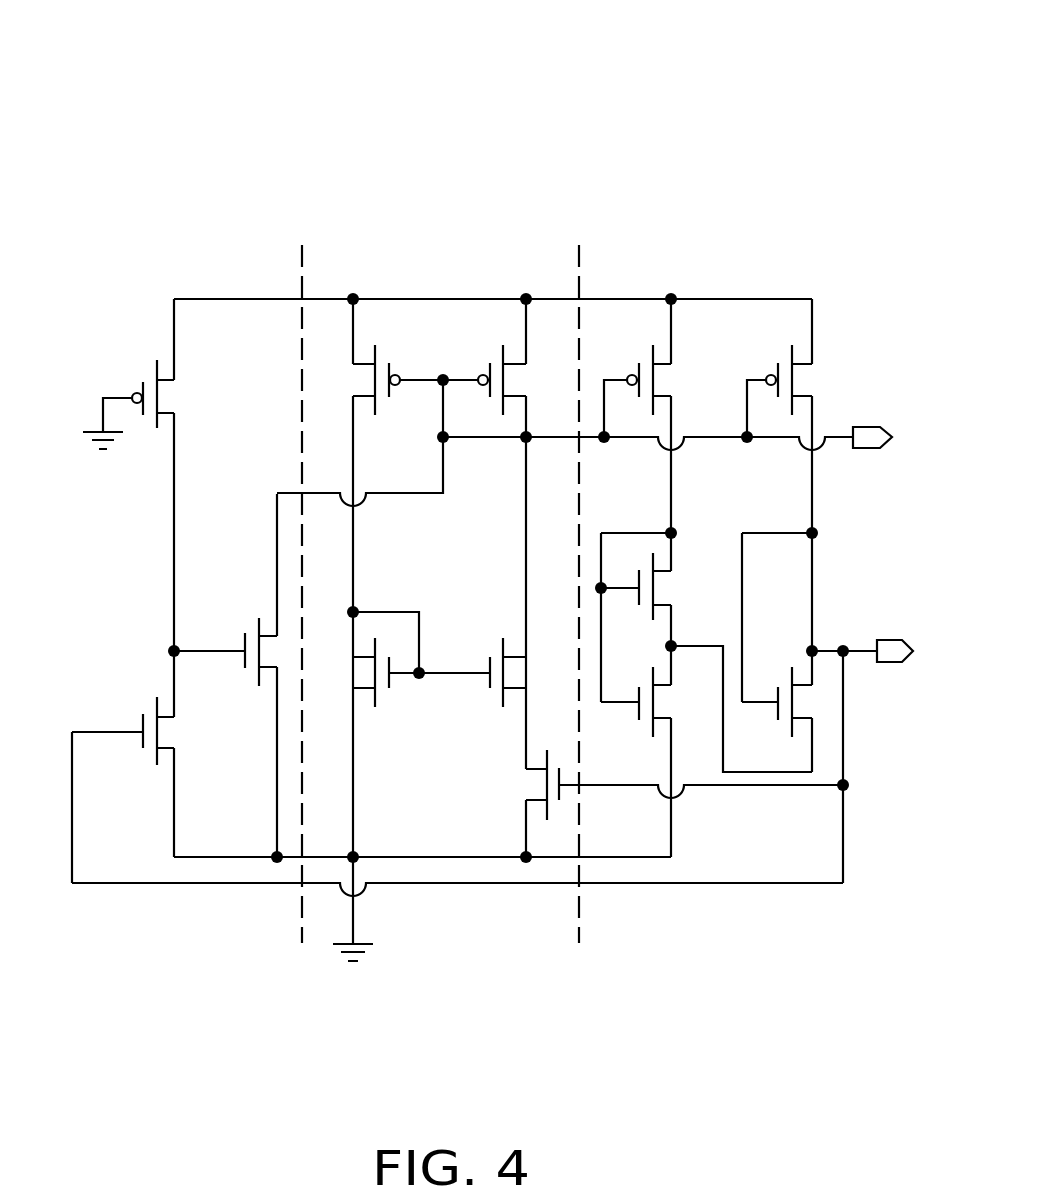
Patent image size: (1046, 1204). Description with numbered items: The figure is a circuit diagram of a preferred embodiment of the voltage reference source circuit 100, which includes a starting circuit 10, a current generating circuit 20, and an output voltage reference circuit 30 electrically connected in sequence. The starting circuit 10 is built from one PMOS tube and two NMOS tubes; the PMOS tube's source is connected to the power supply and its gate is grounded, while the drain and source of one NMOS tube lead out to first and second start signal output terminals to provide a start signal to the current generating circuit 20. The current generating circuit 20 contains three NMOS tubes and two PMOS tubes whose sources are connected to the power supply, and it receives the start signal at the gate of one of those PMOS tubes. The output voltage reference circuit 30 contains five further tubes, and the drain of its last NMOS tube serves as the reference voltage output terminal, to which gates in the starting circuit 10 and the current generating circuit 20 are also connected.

The voltage reference source circuit 100 is at (414, 65).
The starting circuit 10 is at (236, 234).
The current generating circuit 20 is at (469, 234).
The output voltage reference circuit 30 is at (717, 234).